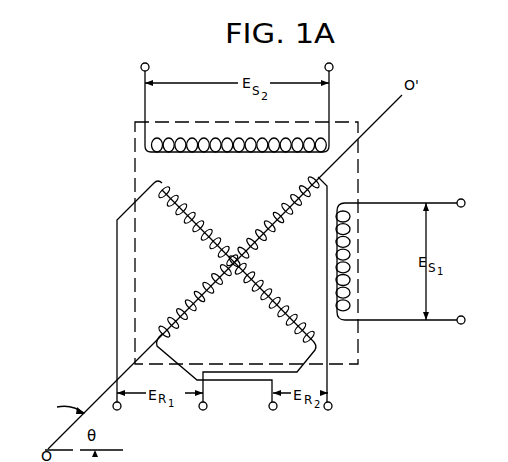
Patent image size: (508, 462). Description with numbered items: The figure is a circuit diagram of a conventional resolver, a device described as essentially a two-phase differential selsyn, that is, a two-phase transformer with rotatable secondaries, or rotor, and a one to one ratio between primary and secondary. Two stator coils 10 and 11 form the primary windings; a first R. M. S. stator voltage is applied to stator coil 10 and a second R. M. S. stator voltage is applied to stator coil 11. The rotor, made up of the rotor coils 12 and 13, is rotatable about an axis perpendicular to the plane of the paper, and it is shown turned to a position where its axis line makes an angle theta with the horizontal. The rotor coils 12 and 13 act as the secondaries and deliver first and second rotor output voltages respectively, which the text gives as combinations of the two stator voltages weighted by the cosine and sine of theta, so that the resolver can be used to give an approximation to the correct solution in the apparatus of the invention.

The stator coil 10 is at (346, 258).
The stator coil 11 is at (247, 137).
The rotor coil 12 is at (199, 220).
The rotor coil 13 is at (199, 284).